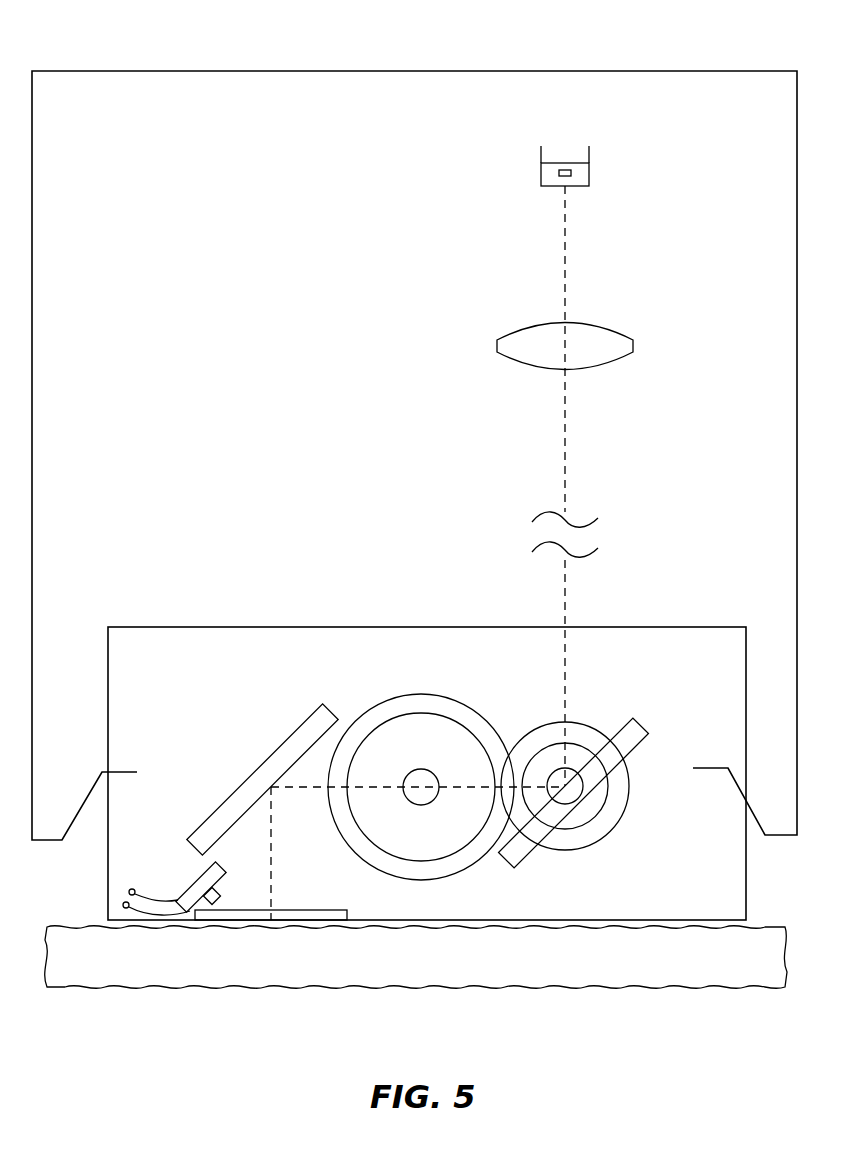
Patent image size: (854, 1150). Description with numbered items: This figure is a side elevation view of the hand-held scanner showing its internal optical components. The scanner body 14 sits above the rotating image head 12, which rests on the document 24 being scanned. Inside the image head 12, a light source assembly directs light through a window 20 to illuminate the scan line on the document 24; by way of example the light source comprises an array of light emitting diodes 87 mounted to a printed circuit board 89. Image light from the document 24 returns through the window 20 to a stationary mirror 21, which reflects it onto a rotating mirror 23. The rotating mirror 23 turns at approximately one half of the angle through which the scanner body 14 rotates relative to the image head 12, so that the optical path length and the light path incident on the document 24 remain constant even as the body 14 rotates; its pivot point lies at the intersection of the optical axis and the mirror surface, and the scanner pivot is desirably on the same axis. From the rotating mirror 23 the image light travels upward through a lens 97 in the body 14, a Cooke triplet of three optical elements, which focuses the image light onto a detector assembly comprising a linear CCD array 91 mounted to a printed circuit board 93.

The hand-held scanner body 14 is at (414, 71).
The rotating image head 12 is at (746, 883).
The printed circuit board 93 is at (592, 170).
The linear CCD array 91 is at (571, 178).
The lens 97 is at (620, 338).
The stationary mirror 21 is at (315, 718).
The rotating mirror 23 is at (518, 862).
The printed circuit board 89 is at (195, 888).
The light emitting diodes 87 is at (222, 910).
The window 20 is at (325, 921).
The document 24 is at (690, 972).